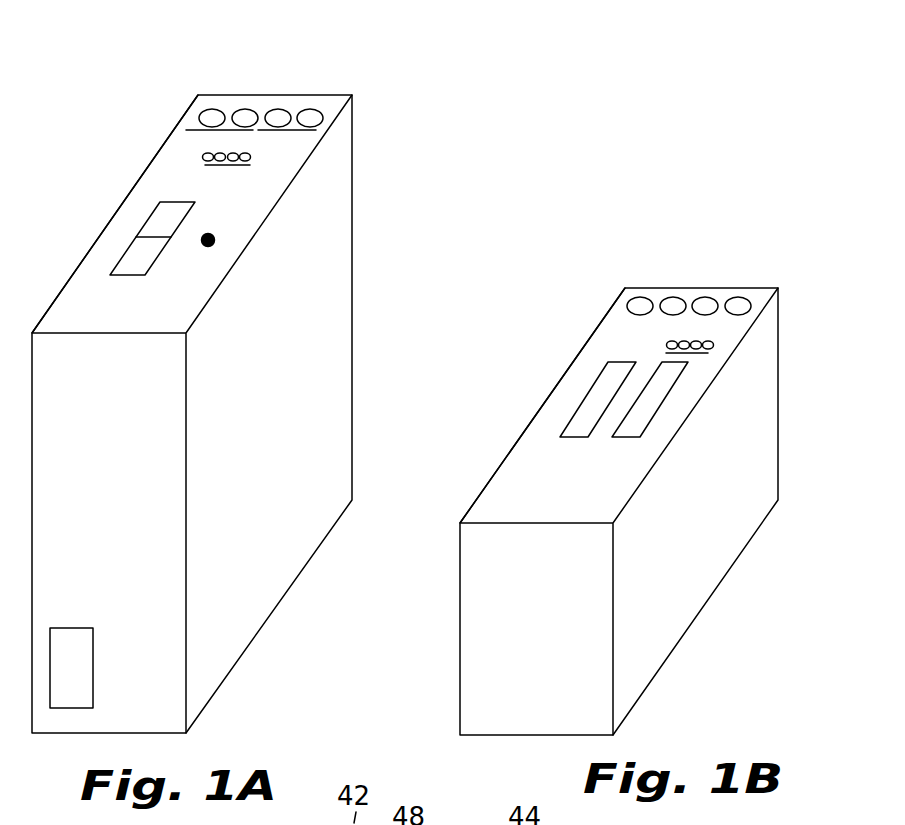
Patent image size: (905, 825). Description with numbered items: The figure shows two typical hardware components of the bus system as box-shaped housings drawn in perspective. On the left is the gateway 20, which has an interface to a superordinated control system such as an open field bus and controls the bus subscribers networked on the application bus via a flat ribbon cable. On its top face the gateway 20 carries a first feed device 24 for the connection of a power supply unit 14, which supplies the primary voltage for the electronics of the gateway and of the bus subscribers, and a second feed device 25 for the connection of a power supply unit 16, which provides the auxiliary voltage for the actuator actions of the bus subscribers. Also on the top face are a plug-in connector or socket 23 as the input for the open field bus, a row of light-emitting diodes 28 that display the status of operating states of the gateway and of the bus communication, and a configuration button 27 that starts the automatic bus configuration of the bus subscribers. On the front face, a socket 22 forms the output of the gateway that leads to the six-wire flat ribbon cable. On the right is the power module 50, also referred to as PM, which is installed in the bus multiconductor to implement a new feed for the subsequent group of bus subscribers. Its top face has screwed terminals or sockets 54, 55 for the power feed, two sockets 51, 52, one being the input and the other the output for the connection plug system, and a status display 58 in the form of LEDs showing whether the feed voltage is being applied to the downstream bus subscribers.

In FIG. 1A, the power supply unit 14 is at (243, 93).
In FIG. 1A, the power supply unit 16 is at (305, 93).
In FIG. 1A, the gateway 20 is at (317, 382).
In FIG. 1A, the socket 22 is at (80, 698).
In FIG. 1A, the plug-in connector or socket 23 is at (133, 260).
In FIG. 1A, the first feed device 24 is at (223, 130).
In FIG. 1A, the second feed device 25 is at (280, 130).
In FIG. 1A, the configuration button 27 is at (204, 246).
In FIG. 1A, the light-emitting diode 28 is at (212, 165).
In FIG. 1B, the power module 50 is at (673, 617).
In FIG. 1B, the socket 51 is at (627, 438).
In FIG. 1B, the socket 52 is at (627, 438).
In FIG. 1B, the screwed terminal or socket 54 is at (682, 287).
In FIG. 1B, the screwed terminal or socket 55 is at (747, 287).
In FIG. 1B, the status display 58 is at (666, 356).